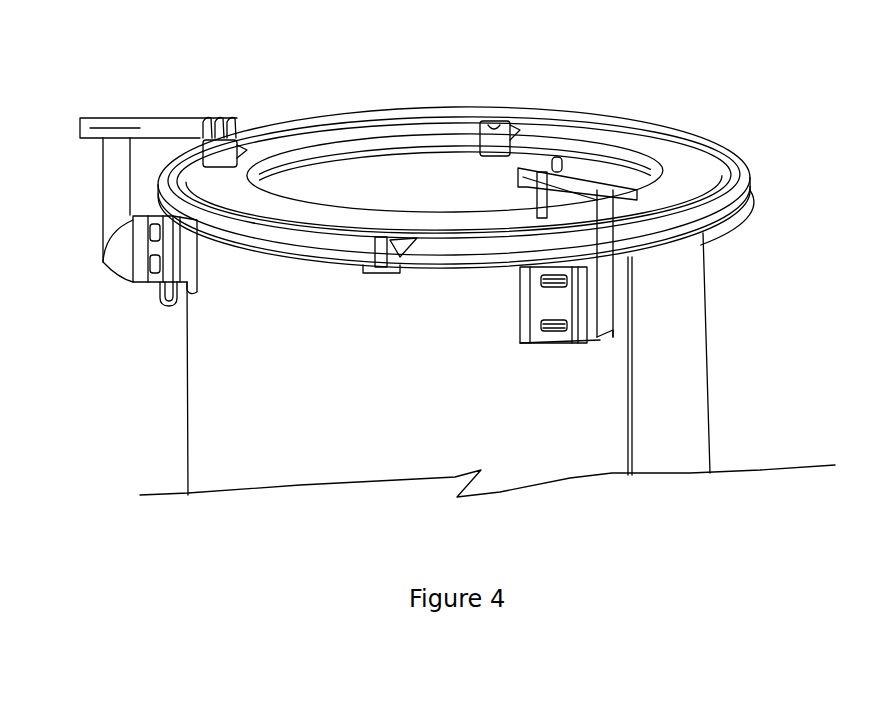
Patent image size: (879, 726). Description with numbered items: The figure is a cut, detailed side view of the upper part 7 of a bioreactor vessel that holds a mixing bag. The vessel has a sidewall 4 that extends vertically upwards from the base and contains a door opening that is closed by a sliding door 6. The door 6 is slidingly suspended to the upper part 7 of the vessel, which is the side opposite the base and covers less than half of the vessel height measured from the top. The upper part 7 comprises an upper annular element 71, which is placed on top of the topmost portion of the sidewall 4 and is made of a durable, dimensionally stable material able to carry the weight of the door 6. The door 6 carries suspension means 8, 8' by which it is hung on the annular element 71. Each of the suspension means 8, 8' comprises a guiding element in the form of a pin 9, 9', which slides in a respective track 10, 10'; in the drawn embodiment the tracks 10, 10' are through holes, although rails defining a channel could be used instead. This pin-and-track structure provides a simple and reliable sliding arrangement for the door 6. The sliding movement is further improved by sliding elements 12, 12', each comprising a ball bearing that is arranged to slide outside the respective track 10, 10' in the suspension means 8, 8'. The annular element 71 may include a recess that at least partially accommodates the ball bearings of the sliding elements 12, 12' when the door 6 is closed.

The sidewall 4 is at (700, 384).
The sliding door 6 is at (208, 400).
The upper part 7 is at (723, 203).
The upper annular element 71 is at (525, 105).
The suspension means 8 is at (145, 190).
The suspension means 8' is at (667, 266).
The pin 9 is at (208, 108).
The pin 9' is at (497, 118).
The track 10 is at (109, 262).
The track 10' is at (738, 148).
The sliding element 12 is at (263, 119).
The sliding element 12' is at (457, 99).